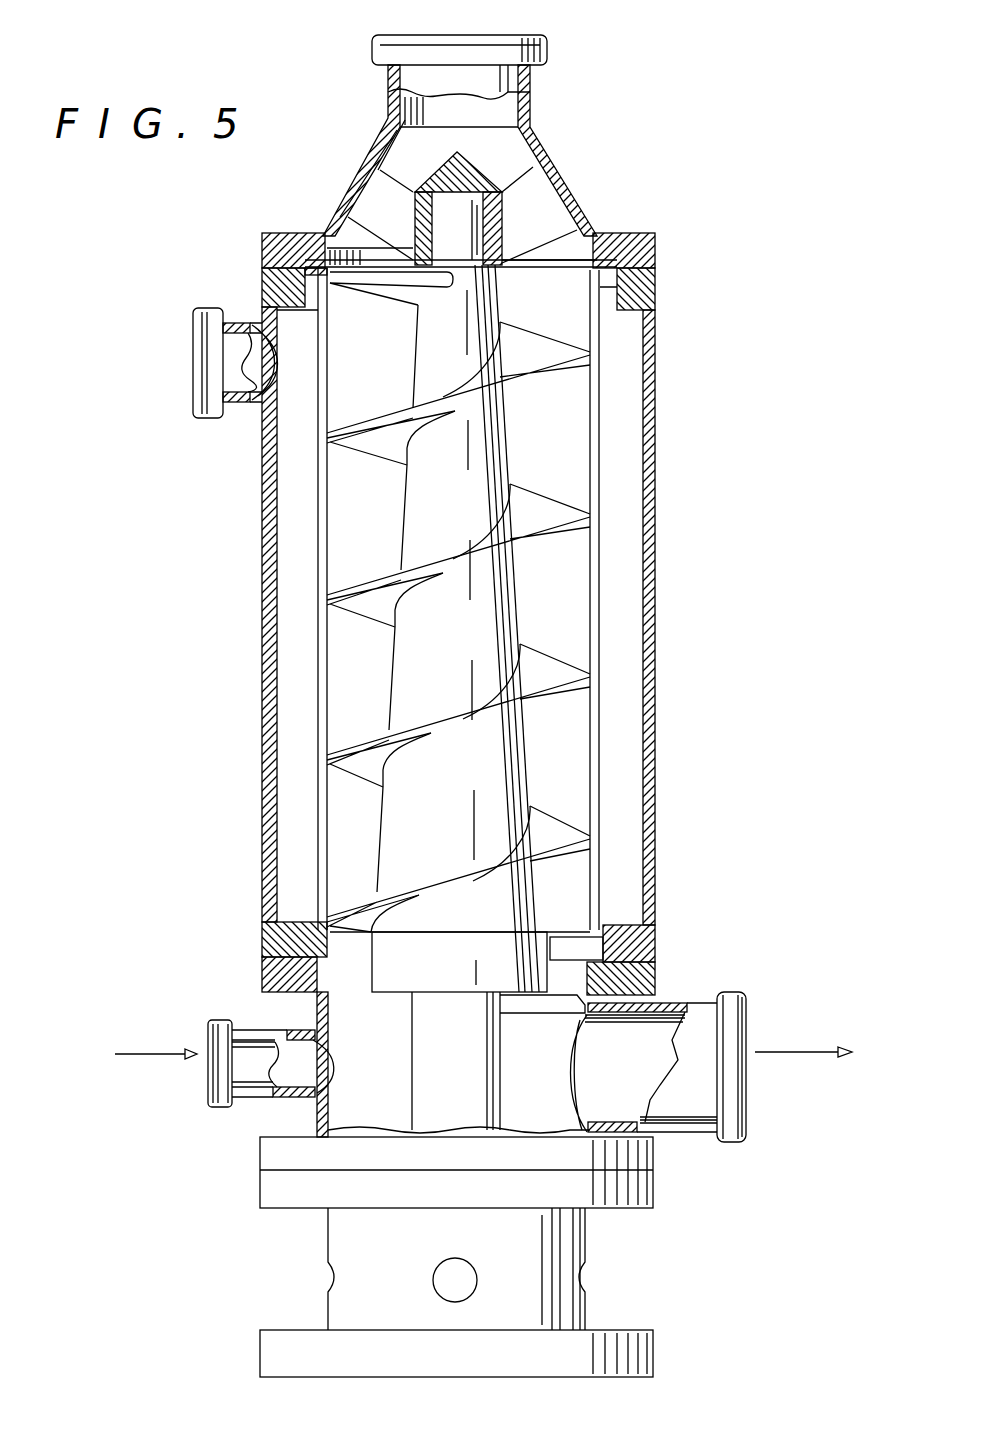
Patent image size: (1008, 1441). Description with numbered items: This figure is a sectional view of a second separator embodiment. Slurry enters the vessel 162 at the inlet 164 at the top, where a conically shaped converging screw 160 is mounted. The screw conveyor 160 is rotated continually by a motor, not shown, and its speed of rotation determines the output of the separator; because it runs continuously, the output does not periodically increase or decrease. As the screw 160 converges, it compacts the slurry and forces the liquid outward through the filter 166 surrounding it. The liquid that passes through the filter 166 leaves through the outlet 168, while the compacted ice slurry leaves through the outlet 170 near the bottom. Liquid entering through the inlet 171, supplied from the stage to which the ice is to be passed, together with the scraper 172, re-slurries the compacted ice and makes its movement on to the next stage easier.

The conically shaped converging screw 160 is at (462, 652).
The vessel 162 is at (655, 717).
The inlet 164 is at (541, 45).
The filter 166 is at (320, 660).
The outlet 168 is at (195, 348).
The outlet 170 is at (745, 1082).
The inlet 171 is at (212, 1068).
The scraper 172 is at (657, 962).